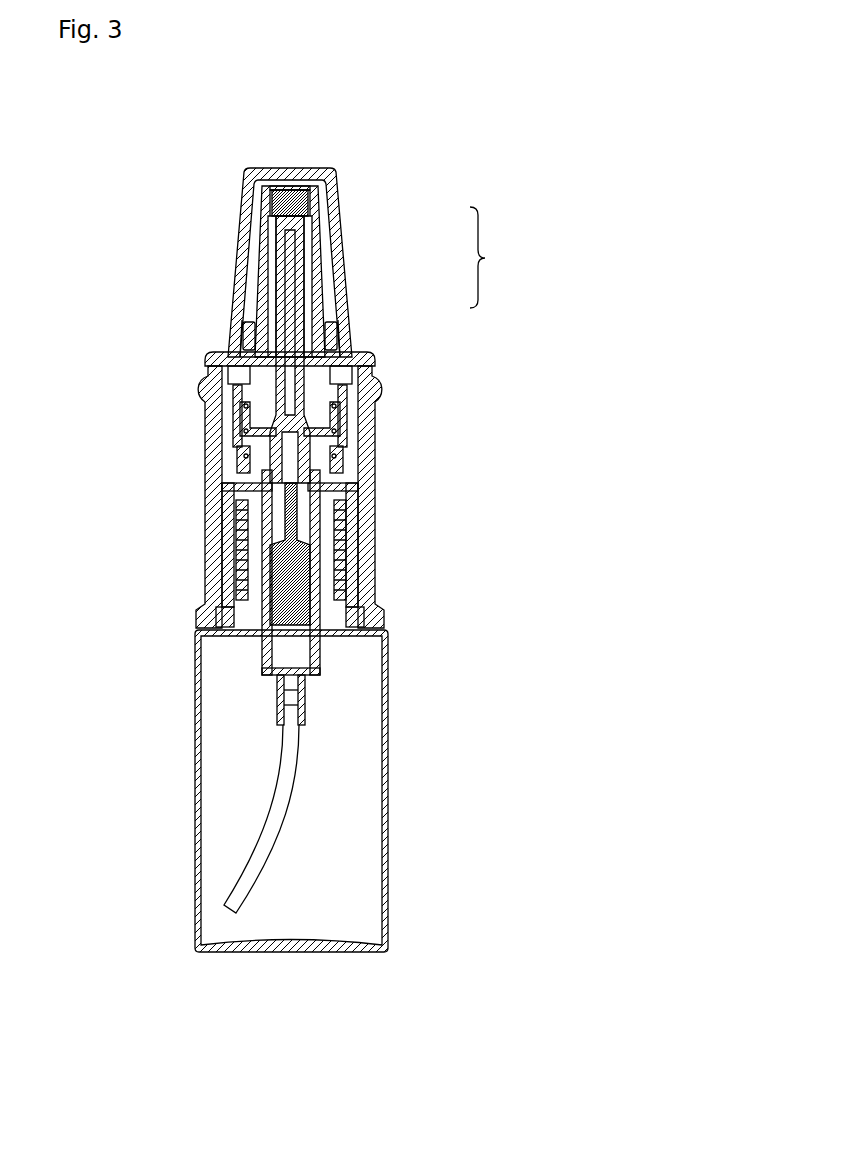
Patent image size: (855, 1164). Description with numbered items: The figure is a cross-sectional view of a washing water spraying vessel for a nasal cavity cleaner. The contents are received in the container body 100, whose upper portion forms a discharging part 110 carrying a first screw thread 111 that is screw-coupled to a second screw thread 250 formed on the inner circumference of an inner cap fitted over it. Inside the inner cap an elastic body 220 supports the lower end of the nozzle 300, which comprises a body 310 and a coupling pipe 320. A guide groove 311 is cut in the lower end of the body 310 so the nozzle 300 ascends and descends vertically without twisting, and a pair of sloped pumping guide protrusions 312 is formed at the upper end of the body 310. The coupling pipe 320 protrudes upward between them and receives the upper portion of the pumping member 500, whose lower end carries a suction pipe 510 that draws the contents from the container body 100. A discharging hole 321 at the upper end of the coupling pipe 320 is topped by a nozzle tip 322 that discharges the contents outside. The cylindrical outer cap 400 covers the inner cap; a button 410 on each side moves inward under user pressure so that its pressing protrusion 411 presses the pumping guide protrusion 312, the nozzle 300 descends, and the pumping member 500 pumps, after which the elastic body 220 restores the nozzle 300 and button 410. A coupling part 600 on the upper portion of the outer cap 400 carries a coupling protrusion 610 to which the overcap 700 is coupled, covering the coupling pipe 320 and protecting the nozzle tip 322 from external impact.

The container body 100 is at (388, 845).
The discharging part 110 is at (353, 617).
The first screw thread 111 is at (353, 563).
The elastic body 220 is at (327, 448).
The second screw thread 250 is at (352, 595).
The nozzle 300 is at (504, 257).
The body 310 is at (323, 373).
The guide groove 311 is at (345, 428).
The pumping guide protrusion 312 is at (233, 345).
The coupling pipe 320 is at (327, 312).
The discharging hole 321 is at (302, 220).
The nozzle tip 322 is at (303, 190).
The outer cap 400 is at (223, 513).
The button 410 is at (205, 420).
The pressing protrusion 411 is at (240, 373).
The pumping member 500 is at (247, 542).
The suction pipe 510 is at (278, 820).
The coupling part 600 is at (217, 357).
The coupling protrusion 610 is at (232, 335).
The overcap 700 is at (277, 170).